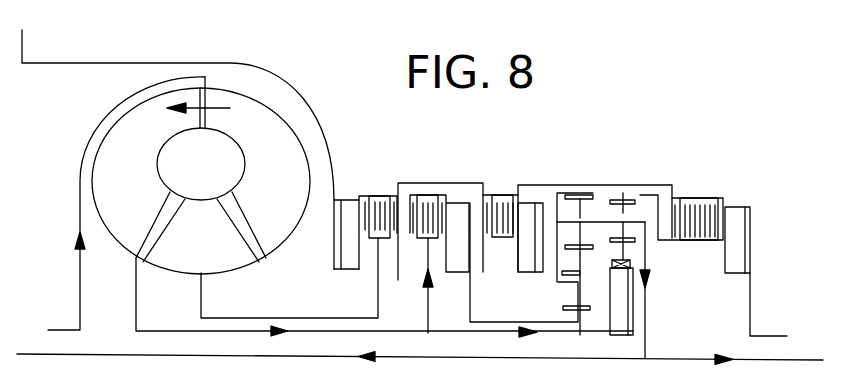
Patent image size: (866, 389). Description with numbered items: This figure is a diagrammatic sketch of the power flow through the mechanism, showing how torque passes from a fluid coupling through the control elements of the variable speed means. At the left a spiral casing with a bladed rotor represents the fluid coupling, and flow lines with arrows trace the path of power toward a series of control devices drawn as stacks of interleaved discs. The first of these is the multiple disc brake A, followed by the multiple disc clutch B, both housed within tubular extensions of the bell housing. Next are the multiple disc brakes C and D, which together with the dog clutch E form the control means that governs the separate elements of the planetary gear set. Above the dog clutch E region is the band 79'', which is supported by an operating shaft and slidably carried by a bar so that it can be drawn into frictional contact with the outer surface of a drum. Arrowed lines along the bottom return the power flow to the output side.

The multiple disc brake A is at (381, 188).
The multiple disc clutch B is at (428, 190).
The multiple disc brake C is at (502, 188).
The multiple disc brake D is at (702, 190).
The dog clutch E is at (645, 222).
The band 79'' is at (595, 247).